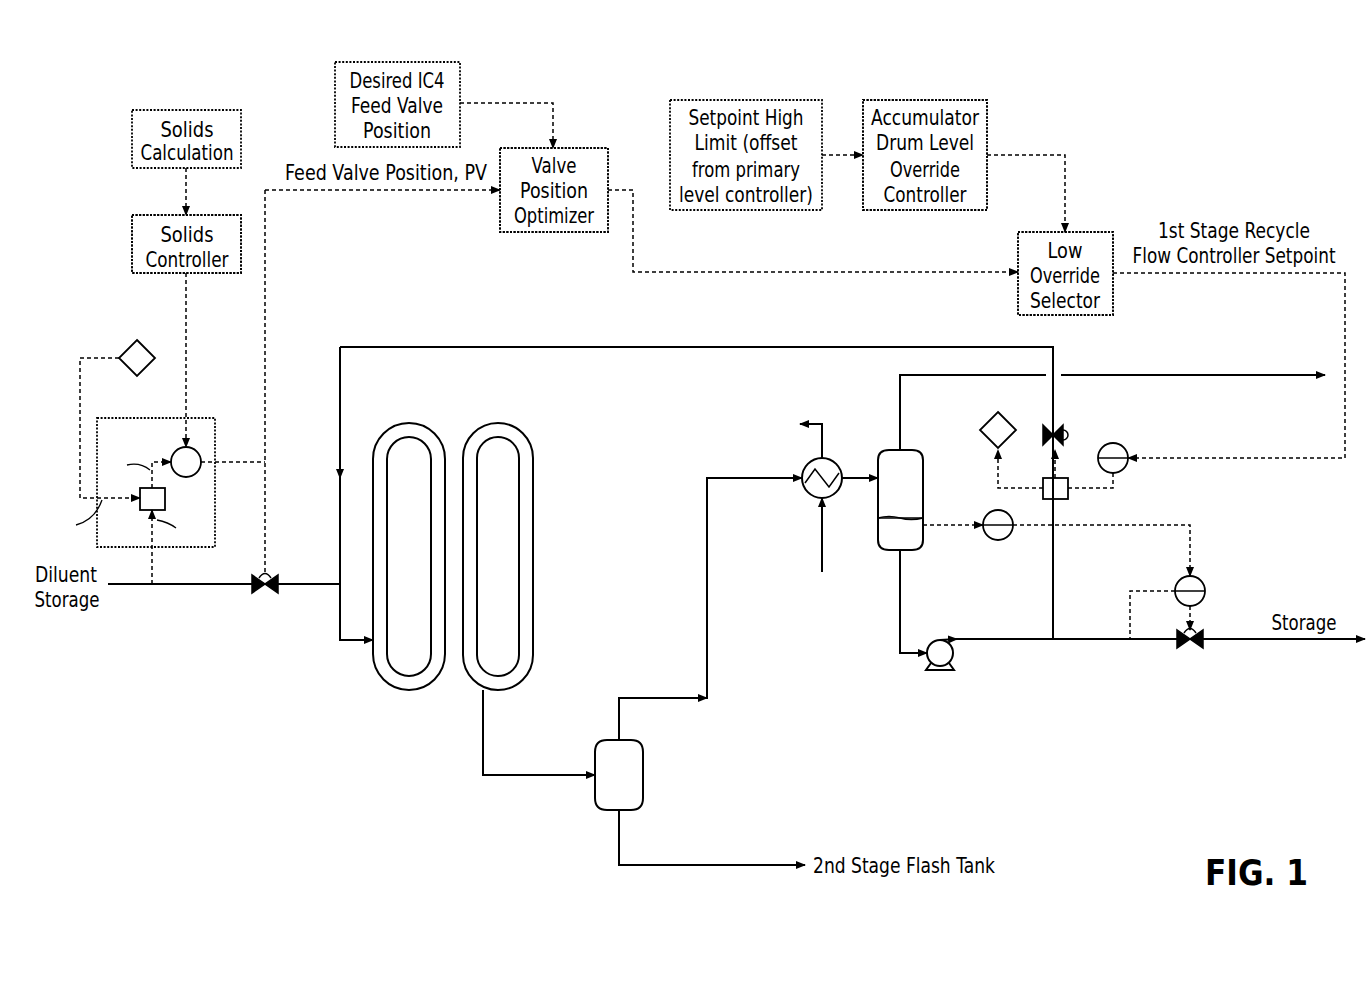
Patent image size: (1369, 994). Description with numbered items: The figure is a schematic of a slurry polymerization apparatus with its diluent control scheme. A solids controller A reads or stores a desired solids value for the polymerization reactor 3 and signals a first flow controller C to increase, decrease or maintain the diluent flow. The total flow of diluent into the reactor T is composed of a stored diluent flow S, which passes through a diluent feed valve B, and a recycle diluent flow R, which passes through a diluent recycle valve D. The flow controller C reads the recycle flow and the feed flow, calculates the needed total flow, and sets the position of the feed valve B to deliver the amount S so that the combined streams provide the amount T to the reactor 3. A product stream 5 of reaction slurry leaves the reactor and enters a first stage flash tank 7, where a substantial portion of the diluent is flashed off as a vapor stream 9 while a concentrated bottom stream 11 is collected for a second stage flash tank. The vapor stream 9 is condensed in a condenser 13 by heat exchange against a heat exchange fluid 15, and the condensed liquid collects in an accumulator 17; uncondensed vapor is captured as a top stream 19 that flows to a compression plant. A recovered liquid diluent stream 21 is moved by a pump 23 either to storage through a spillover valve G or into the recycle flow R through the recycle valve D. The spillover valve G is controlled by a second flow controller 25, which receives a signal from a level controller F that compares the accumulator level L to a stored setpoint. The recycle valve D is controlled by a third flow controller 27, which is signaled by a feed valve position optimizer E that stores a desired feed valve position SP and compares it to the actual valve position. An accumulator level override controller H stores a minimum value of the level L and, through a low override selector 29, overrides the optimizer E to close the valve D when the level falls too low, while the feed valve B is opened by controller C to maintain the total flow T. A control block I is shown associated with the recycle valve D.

The polymerization reactor 3 is at (535, 547).
The product stream 5 is at (485, 730).
The first stage flash tank 7 is at (643, 775).
The vapor stream 9 is at (662, 697).
The bottom stream 11 is at (695, 863).
The condenser 13 is at (808, 493).
The heat exchange fluid 15 is at (820, 438).
The accumulator 17 is at (885, 556).
The top stream 19 is at (1235, 375).
The recovered liquid diluent stream 21 is at (902, 597).
The pump 23 is at (955, 657).
The second flow controller 25 is at (1205, 578).
The third flow controller 27 is at (1125, 448).
The low override selector 29 is at (1088, 232).
The solids controller A is at (132, 243).
The diluent feed valve B is at (258, 594).
The first flow controller C is at (160, 418).
The diluent recycle valve D is at (1066, 425).
The feed valve position optimizer E is at (583, 148).
The level controller F is at (1003, 540).
The spillover valve G is at (1195, 646).
The accumulator level override controller H is at (987, 117).
The recycle flow controller block I is at (1068, 495).
The level L is at (925, 518).
The recycle diluent flow R is at (600, 347).
The stored diluent flow S is at (210, 584).
The desired feed valve position SP is at (520, 103).
The flow of diluent into the reactor T is at (338, 620).